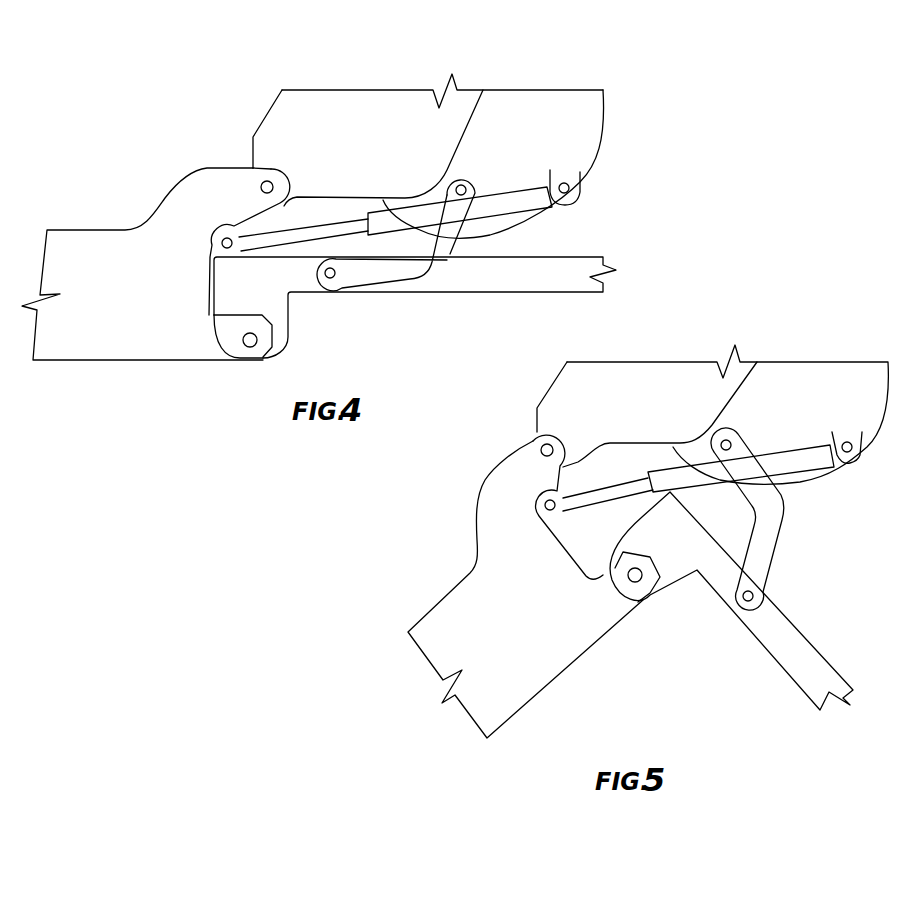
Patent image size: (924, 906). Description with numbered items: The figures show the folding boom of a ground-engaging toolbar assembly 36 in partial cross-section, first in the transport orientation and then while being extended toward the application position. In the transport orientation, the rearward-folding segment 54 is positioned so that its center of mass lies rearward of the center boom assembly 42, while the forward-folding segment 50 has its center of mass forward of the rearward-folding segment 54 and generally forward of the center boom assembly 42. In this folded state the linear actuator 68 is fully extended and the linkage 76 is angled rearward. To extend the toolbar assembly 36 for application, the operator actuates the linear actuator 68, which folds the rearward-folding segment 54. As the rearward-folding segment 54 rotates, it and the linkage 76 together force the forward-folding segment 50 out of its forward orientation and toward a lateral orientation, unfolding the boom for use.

In FIG. 4, the toolbar assembly 36 is at (216, 112).
In FIG. 5, the toolbar assembly 36 is at (880, 335).
In FIG. 4, the center boom assembly 42 is at (474, 68).
In FIG. 4, the forward-folding segment 50 is at (499, 314).
In FIG. 5, the forward-folding segment 50 is at (764, 692).
In FIG. 4, the rearward-folding segment 54 is at (115, 209).
In FIG. 5, the rearward-folding segment 54 is at (557, 707).
In FIG. 4, the linear actuator 68 is at (494, 195).
In FIG. 5, the linear actuator 68 is at (770, 452).
In FIG. 4, the linkage 76 is at (397, 292).
In FIG. 5, the linkage 76 is at (775, 552).